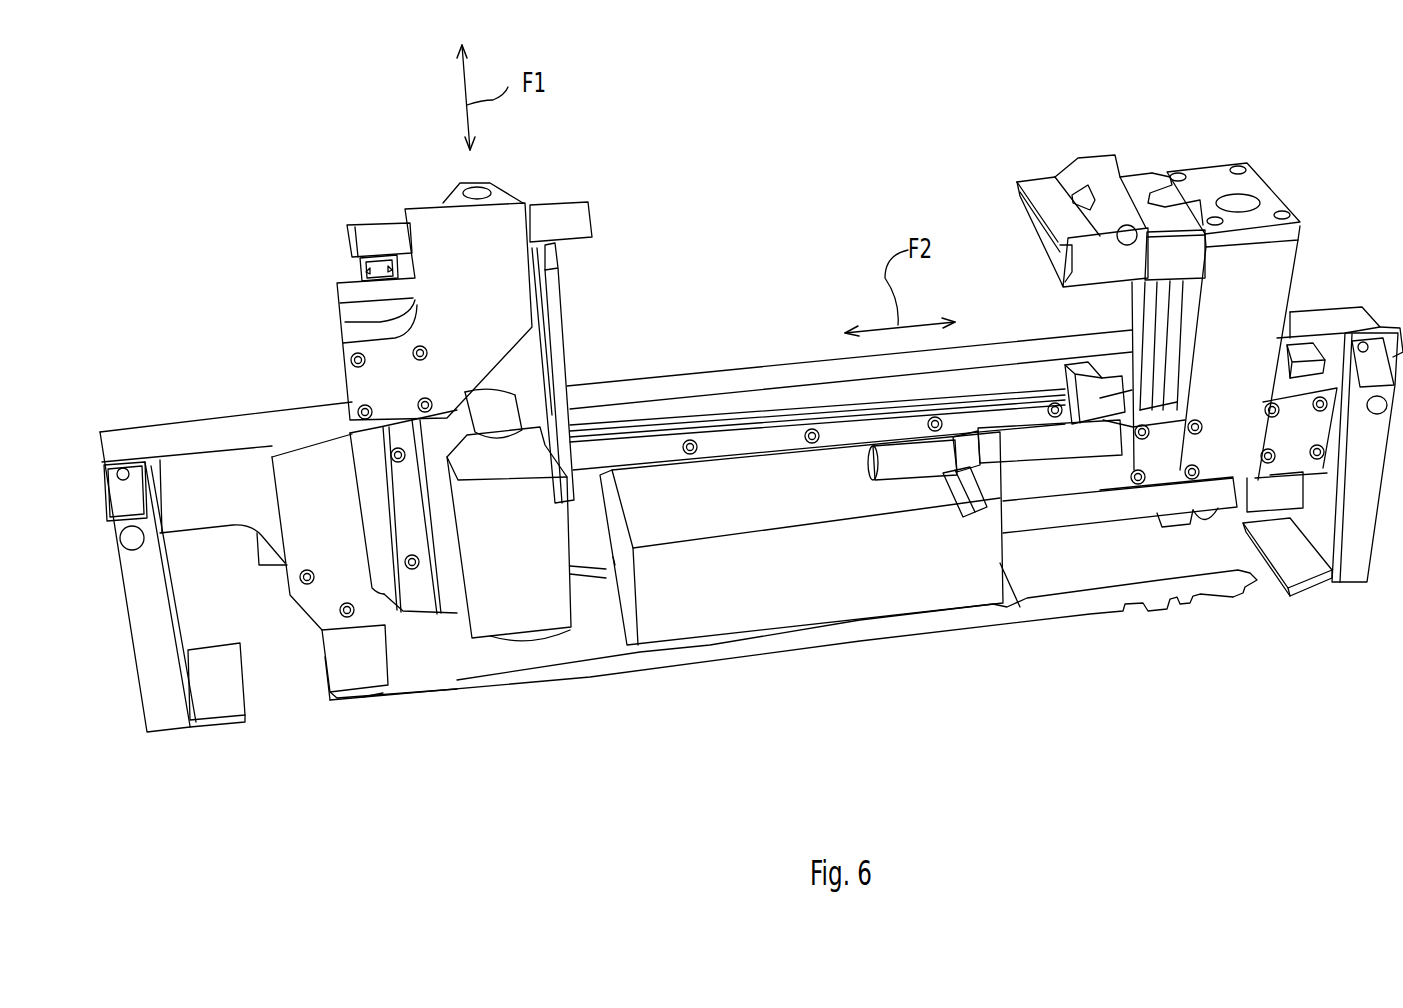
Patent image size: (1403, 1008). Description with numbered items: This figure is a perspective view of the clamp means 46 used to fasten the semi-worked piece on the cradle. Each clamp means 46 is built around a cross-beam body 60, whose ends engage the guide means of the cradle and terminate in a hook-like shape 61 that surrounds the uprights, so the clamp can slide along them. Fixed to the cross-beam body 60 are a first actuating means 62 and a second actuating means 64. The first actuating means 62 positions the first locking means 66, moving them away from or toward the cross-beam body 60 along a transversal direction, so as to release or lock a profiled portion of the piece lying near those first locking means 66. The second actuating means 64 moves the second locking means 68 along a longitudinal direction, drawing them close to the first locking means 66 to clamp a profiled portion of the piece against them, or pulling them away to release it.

The clamp means 46 is at (680, 698).
The cross-beam body 60 is at (948, 623).
The hook-like shape 61 is at (270, 718).
The first actuating means 62 is at (523, 607).
The second actuating means 64 is at (775, 605).
The first locking means 66 is at (508, 250).
The second locking means 68 is at (1235, 275).